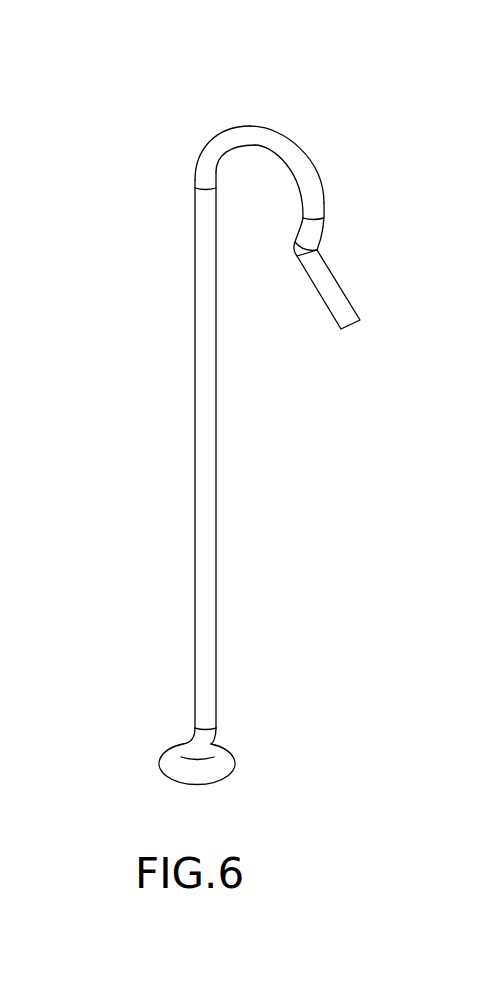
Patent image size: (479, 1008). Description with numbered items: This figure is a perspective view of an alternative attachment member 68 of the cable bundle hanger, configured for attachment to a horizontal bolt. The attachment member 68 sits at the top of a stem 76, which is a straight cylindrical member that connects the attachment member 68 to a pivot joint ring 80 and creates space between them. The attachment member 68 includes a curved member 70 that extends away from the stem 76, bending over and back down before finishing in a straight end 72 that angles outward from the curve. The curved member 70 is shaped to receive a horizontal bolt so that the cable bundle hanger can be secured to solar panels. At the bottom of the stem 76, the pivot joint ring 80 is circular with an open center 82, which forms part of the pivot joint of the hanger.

The attachment member 68 is at (307, 160).
The curved member 70 is at (253, 138).
The straight end 72 is at (333, 298).
The stem 76 is at (210, 535).
The pivot joint ring 80 is at (216, 758).
The open center 82 is at (202, 757).